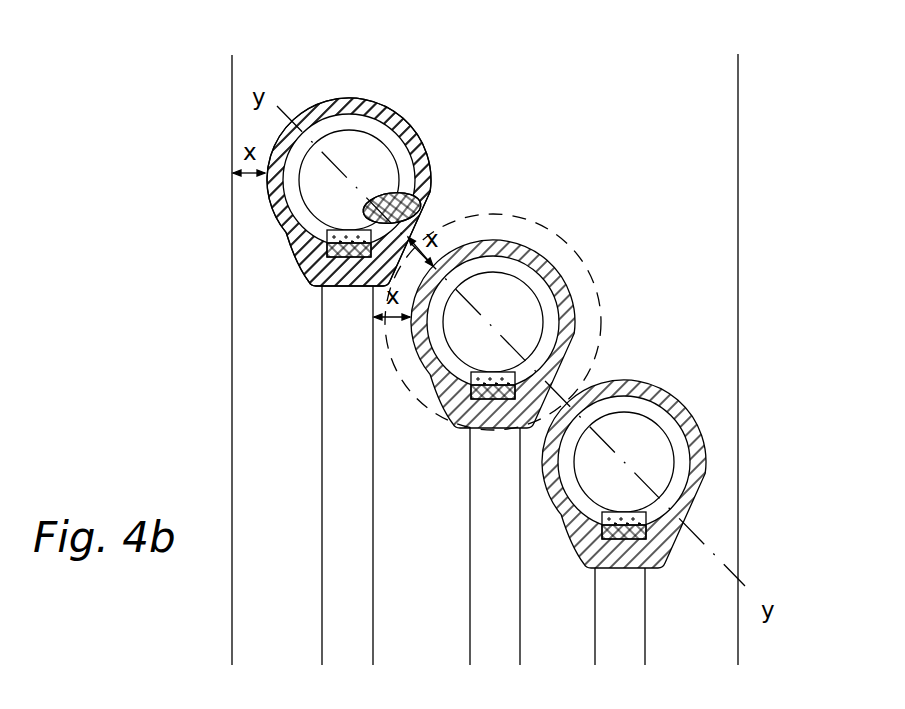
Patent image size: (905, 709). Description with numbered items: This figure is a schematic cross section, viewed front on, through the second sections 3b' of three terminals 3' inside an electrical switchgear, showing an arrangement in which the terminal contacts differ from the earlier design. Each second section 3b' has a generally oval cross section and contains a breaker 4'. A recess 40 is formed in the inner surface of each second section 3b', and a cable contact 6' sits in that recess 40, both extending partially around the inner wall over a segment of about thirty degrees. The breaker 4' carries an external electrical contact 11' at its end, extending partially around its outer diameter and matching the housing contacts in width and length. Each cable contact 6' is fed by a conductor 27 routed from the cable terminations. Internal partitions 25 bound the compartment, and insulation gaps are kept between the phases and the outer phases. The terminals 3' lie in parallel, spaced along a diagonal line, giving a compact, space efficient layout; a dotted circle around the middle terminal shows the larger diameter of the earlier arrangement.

The second section 3b' is at (339, 156).
The terminal 3' is at (388, 192).
The breaker 4' is at (370, 155).
The cable contact 6' is at (385, 165).
The second external electrical contact 11' is at (437, 185).
The recess 40 is at (320, 246).
The conductor 27 is at (322, 342).
The internal partition 25 is at (232, 262).